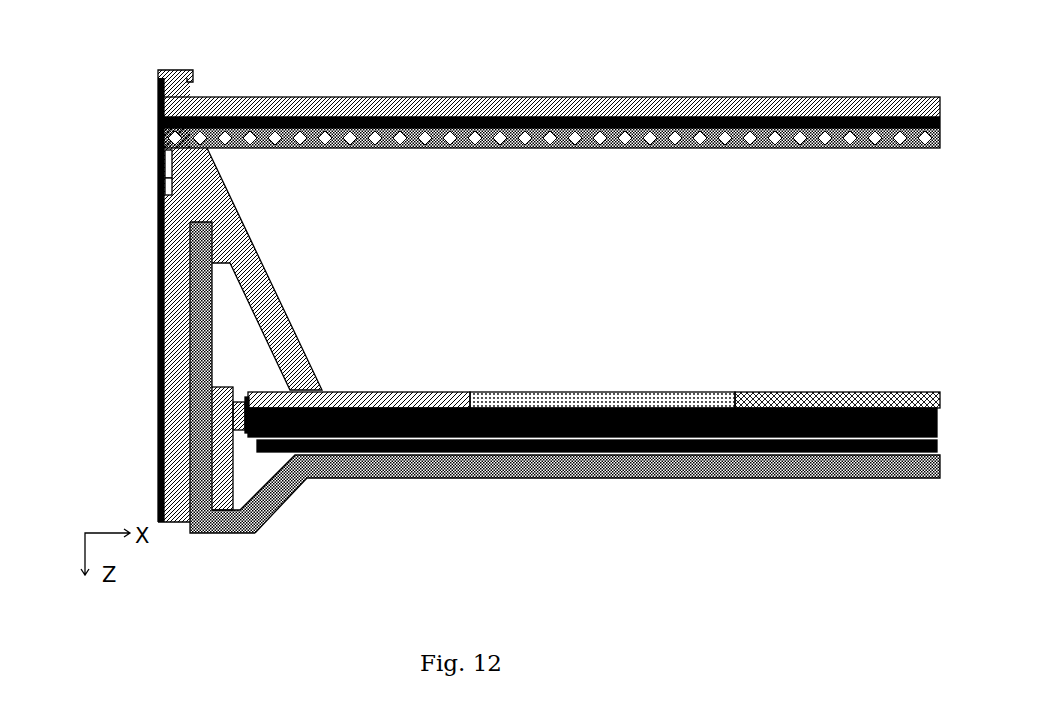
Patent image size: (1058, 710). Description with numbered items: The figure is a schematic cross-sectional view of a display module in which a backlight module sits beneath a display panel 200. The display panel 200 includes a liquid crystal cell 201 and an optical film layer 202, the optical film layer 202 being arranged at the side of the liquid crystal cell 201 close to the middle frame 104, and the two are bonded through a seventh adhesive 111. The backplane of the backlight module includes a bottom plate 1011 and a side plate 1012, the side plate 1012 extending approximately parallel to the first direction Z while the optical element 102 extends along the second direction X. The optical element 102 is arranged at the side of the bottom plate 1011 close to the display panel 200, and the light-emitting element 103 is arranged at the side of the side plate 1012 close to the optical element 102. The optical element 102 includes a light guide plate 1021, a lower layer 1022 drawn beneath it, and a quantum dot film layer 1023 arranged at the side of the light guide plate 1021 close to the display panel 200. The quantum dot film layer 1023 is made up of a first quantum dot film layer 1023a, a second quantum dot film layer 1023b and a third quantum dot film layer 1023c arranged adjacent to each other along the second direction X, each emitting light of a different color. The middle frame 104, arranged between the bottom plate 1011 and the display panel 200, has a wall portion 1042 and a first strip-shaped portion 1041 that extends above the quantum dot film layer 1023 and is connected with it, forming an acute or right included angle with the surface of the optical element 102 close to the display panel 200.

The seventh adhesive 111 is at (472, 122).
The display panel 200 is at (551, 100).
The liquid crystal cell 201 is at (657, 75).
The optical film layer 202 is at (750, 135).
The middle frame 104 is at (243, 296).
The first strip-shaped portion 1041 is at (274, 352).
The side wall portion of frame 1042 is at (177, 279).
The side plate 1012 is at (207, 360).
The bottom plate 1011 is at (485, 462).
The light-emitting element 103 is at (235, 415).
The optical element 102 is at (594, 373).
The light guide plate 1021 is at (485, 410).
The reflective sheet 1022 is at (695, 336).
The quantum dot film layer 1023 is at (594, 375).
The first quantum dot film layer 1023a is at (382, 400).
The second quantum dot film layer 1023b is at (757, 366).
The third quantum dot film layer 1023c is at (843, 403).